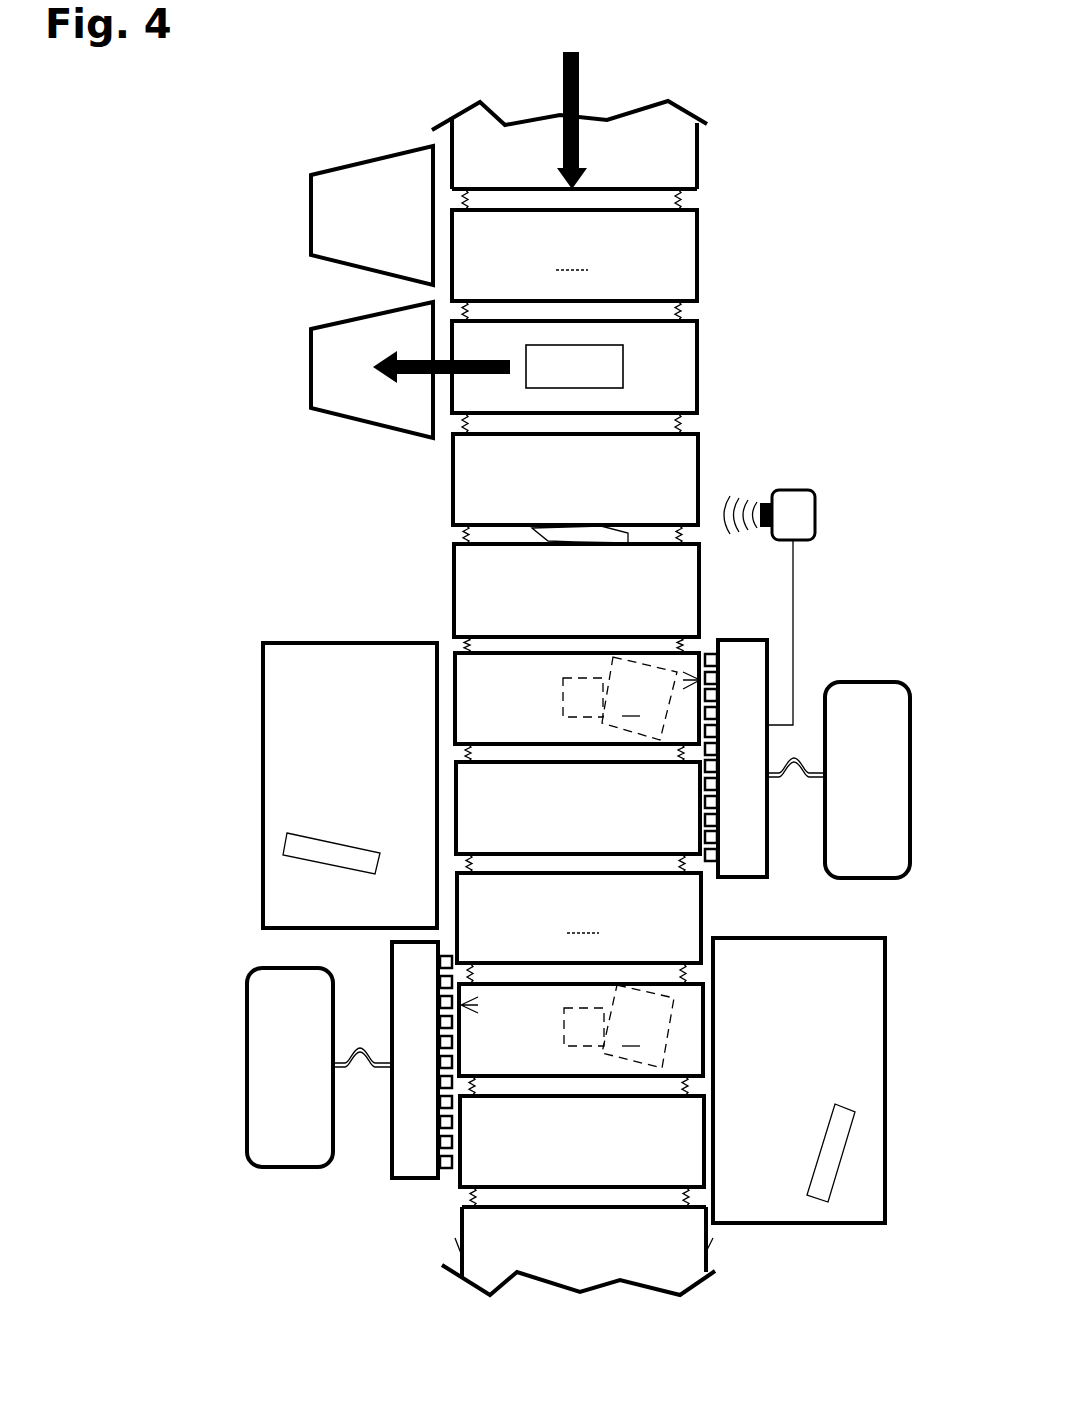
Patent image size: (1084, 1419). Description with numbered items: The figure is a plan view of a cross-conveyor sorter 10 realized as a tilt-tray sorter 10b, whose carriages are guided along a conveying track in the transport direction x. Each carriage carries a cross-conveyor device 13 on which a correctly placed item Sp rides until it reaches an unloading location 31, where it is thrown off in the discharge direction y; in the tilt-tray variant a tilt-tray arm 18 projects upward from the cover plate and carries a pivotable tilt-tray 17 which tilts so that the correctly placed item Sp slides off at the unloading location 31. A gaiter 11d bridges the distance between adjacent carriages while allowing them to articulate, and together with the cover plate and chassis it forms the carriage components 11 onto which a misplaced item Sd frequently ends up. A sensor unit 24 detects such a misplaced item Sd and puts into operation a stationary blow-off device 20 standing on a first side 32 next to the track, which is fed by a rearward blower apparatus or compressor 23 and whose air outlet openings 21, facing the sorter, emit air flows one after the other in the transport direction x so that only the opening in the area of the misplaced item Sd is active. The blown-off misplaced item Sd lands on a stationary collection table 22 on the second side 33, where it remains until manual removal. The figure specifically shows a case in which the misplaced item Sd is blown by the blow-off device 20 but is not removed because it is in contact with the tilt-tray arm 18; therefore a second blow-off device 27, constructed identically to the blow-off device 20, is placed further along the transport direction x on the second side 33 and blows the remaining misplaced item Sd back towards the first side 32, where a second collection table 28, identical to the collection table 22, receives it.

The cross-conveyor sorter 10 is at (537, 648).
The tilt-tray sorter 10b is at (362, 97).
The carriage components 11 is at (688, 200).
The gaiter 11d is at (688, 418).
The cross-conveyor device 13 is at (576, 586).
The tilt-tray 17 is at (675, 268).
The tilt-tray arm 18 is at (563, 701).
The blow-off device 20 is at (845, 650).
The air outlet openings 21 is at (708, 655).
The collection table 22 is at (278, 708).
The blower apparatus or compressor 23 is at (247, 1136).
The sensor unit 24 is at (818, 512).
The second blow-off device 27 is at (362, 964).
The second collection table 28 is at (862, 1223).
The unloading location 31 is at (311, 217).
The first side 32 is at (708, 1250).
The second side 33 is at (460, 1256).
The transport direction x is at (579, 60).
The discharge direction y is at (420, 372).
The correctly placed item Sp is at (623, 367).
The misplaced item Sd is at (548, 545).